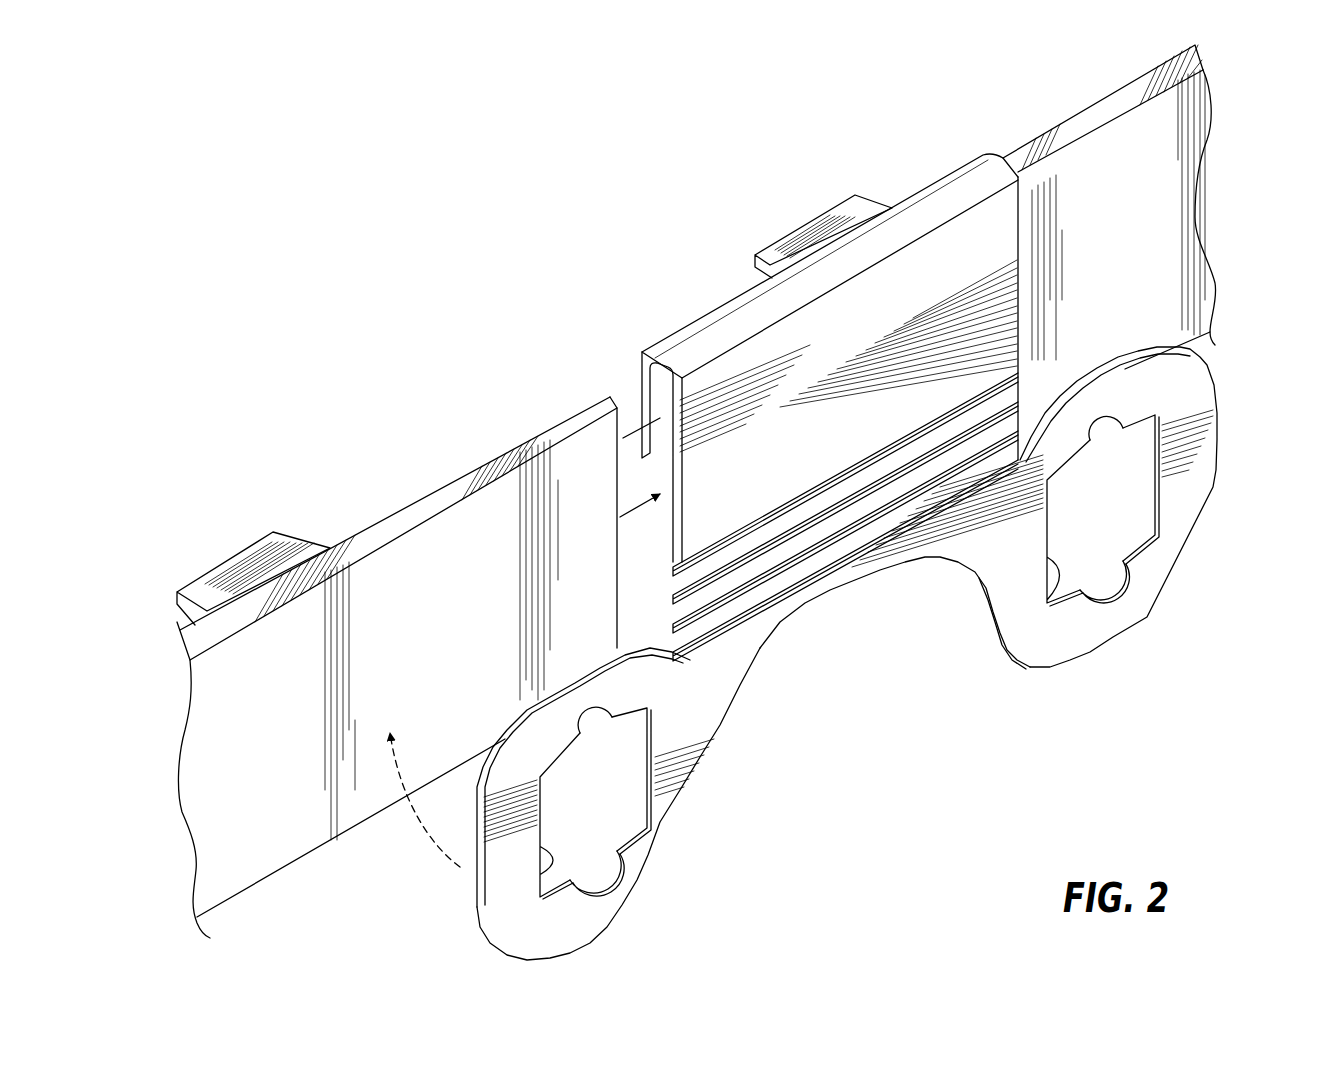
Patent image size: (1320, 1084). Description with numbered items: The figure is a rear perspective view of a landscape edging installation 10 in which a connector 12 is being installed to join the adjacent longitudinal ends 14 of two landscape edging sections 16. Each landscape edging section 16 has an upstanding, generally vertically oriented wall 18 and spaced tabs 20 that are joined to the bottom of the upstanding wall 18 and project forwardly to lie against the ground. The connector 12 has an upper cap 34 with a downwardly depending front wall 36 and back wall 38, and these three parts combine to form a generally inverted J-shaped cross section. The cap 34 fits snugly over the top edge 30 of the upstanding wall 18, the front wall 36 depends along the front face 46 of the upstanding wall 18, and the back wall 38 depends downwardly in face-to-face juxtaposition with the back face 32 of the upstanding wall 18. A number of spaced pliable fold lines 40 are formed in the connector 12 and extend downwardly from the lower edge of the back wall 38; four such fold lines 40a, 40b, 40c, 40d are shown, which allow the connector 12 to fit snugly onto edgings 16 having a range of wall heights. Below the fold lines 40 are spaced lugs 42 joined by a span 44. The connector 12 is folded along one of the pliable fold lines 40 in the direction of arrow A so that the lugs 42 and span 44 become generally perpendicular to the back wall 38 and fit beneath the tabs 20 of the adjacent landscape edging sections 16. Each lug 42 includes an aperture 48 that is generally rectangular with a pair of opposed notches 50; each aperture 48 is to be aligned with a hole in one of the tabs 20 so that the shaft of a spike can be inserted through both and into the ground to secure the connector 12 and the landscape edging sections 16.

The landscape edging installation 10 is at (460, 254).
The connector 12 is at (724, 298).
The longitudinal end 14 is at (632, 395).
The landscape edging section 16 is at (371, 524).
The upstanding wall 18 is at (430, 681).
The tab 20 is at (251, 547).
The top edge 30 is at (426, 504).
The back face 32 is at (508, 447).
The upper cap 34 is at (950, 188).
The front wall 36 is at (642, 354).
The back wall 38 is at (875, 420).
The pliable fold lines 40 is at (799, 494).
The pliable fold line 40a is at (777, 597).
The pliable fold line 40b is at (795, 558).
The pliable fold line 40c is at (851, 505).
The pliable fold line 40d is at (884, 452).
The lug 42 is at (692, 800).
The span 44 is at (858, 580).
The front face 46 is at (210, 797).
The aperture 48 is at (540, 897).
The notch 50 is at (596, 712).